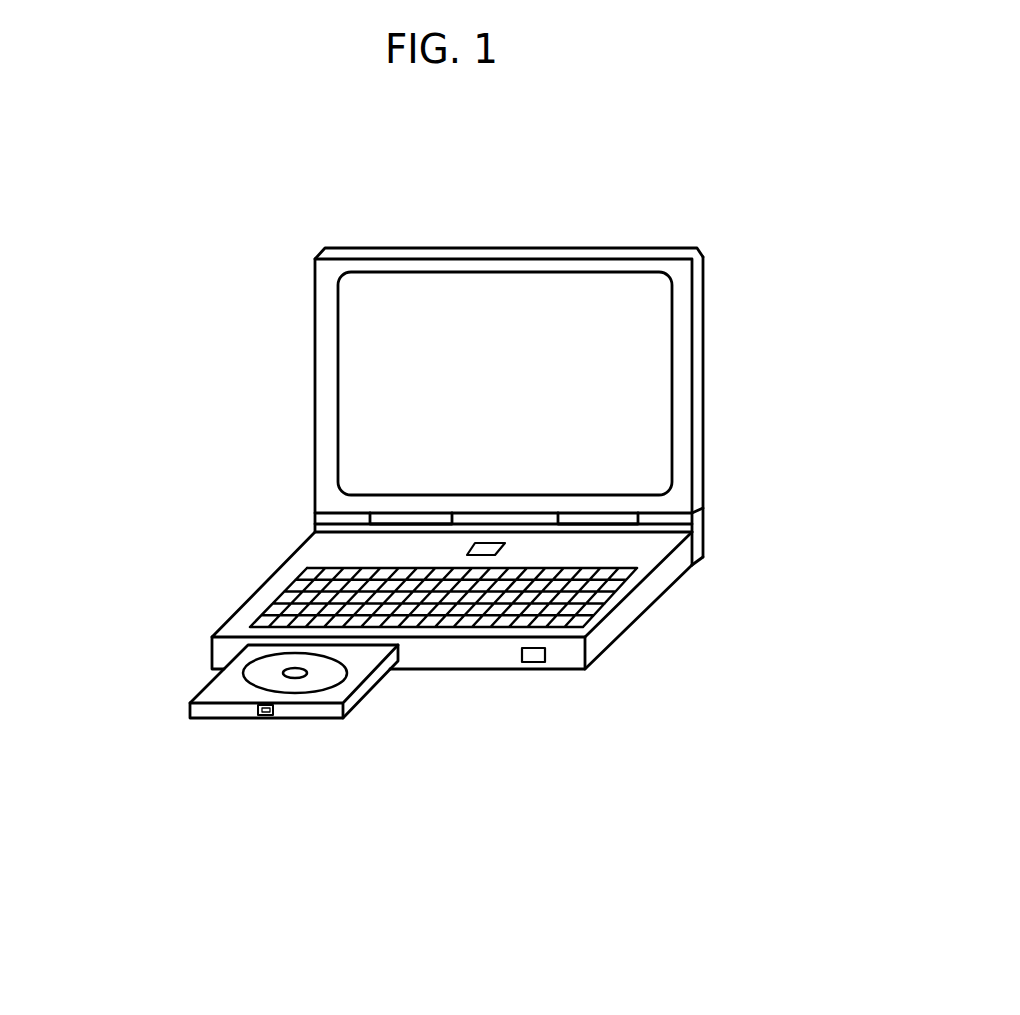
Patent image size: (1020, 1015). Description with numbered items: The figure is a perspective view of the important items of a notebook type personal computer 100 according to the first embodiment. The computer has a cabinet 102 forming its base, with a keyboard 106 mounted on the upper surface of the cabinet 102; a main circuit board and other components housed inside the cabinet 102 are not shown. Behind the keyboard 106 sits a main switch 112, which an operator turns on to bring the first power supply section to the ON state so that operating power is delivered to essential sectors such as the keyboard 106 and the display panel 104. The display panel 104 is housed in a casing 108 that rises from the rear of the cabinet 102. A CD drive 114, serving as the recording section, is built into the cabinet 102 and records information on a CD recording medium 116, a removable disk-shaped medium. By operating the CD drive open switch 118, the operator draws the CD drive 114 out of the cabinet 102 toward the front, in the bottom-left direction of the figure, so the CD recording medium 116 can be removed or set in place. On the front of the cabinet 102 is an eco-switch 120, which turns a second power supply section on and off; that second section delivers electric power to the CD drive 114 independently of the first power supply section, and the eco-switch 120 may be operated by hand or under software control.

The notebook type personal computer 100 is at (292, 568).
The cabinet 102 is at (648, 558).
The display panel 104 is at (492, 300).
The keyboard 106 is at (587, 608).
The casing 108 is at (679, 492).
The main switch 112 is at (473, 547).
The CD drive 114 is at (222, 693).
The CD recording medium 116 is at (327, 677).
The CD drive open switch 118 is at (268, 715).
The eco-switch 120 is at (538, 662).